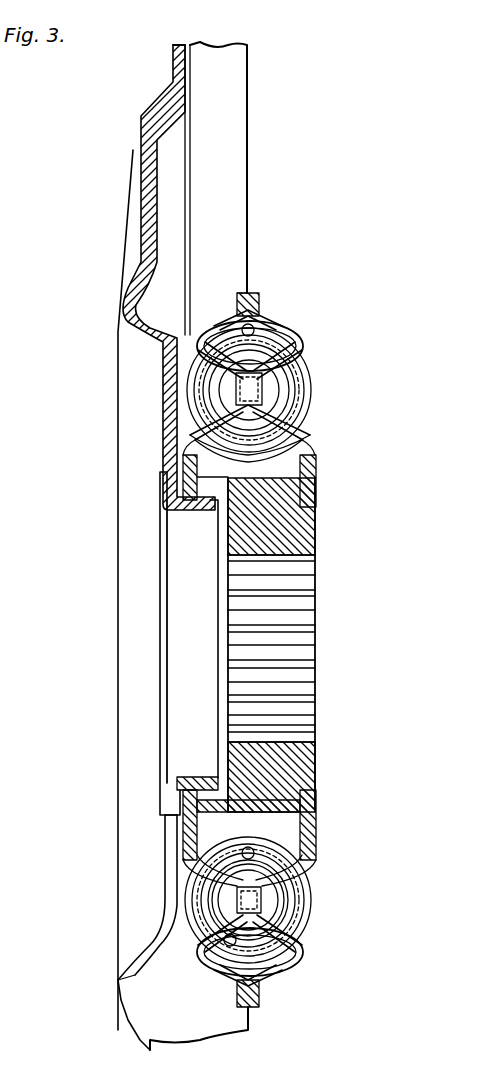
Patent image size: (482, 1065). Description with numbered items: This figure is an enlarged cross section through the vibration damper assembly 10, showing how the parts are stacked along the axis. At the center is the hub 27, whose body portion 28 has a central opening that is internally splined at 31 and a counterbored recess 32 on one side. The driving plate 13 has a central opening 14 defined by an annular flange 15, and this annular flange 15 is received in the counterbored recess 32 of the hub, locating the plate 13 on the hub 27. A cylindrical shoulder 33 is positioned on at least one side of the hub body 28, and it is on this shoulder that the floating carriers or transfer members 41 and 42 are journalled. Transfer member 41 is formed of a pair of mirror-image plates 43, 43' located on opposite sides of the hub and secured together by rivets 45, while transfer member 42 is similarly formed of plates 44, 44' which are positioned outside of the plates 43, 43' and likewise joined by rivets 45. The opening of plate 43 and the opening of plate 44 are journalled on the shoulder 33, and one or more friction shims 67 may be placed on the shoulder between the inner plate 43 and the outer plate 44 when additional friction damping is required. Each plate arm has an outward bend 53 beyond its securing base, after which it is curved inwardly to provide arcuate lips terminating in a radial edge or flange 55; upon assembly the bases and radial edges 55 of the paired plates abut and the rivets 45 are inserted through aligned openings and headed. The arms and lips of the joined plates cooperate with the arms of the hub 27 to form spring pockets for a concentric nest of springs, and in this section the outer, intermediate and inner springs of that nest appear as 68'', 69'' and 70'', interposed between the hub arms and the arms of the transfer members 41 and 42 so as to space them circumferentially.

The vibration damper assembly 10 is at (329, 268).
The driving plate 13 is at (140, 170).
The central opening 14 is at (175, 742).
The annular flange 15 is at (212, 508).
The hub 27 is at (325, 516).
The body portion 28 is at (318, 542).
The internal spline 31 is at (300, 642).
The counterbored recess 32 is at (212, 525).
The cylindrical shoulder 33 is at (305, 764).
The floating carrier or transfer member 41 is at (323, 426).
The floating carrier or transfer member 42 is at (326, 854).
The plate 43 is at (252, 501).
The plate 43' is at (192, 464).
The plate 44 is at (280, 834).
The plate 44' is at (156, 831).
The rivets 45 is at (234, 388).
The outward bend 53 is at (228, 320).
The radial edge or flange 55 is at (250, 294).
The friction shims 67 is at (318, 478).
The ball socket ring 68'' is at (279, 645).
The inner ring 69'' is at (285, 900).
The retainer washer 70'' is at (277, 961).